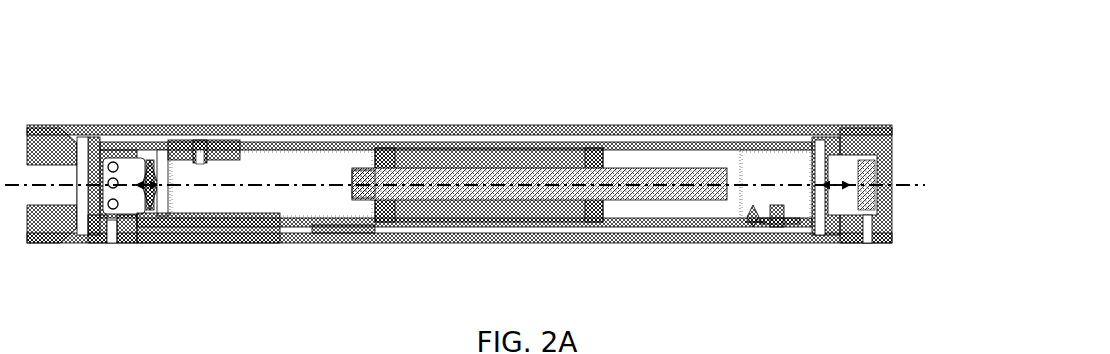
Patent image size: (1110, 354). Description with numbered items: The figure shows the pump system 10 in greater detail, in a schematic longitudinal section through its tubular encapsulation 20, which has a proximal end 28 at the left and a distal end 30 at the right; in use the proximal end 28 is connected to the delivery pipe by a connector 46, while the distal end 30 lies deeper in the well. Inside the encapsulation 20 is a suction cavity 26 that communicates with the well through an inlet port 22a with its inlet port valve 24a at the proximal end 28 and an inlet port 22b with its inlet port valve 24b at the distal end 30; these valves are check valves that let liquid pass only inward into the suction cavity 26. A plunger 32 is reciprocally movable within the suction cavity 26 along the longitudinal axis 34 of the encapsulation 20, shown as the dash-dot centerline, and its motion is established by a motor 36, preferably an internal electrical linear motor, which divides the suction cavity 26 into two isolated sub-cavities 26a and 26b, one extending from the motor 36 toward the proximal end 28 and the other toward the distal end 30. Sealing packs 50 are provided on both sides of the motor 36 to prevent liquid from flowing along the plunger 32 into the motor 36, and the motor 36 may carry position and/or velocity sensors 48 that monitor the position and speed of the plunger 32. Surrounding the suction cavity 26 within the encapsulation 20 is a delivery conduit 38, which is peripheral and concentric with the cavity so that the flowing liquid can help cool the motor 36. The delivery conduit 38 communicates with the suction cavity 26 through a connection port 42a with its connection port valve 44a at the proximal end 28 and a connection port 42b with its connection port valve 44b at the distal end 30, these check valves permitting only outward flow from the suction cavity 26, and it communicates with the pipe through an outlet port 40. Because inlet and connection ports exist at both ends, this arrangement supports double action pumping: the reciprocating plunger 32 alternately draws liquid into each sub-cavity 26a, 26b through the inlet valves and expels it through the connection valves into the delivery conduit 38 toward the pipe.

The pump system 10 is at (163, 32).
The tubular encapsulation 20 is at (392, 127).
The inlet port 22a is at (110, 249).
The inlet port 22b is at (864, 248).
The inlet port valve 24a is at (137, 128).
The inlet port valve 24b is at (817, 128).
The suction cavity 26 is at (277, 162).
The sub-cavity 26a is at (298, 176).
The sub-cavity 26b is at (748, 183).
The proximal end 28 is at (41, 102).
The distal end 30 is at (884, 100).
The plunger 32 is at (484, 198).
The longitudinal axis 34 is at (305, 183).
The motor 36 is at (437, 212).
The delivery conduit 38 is at (645, 130).
The outlet port 40 is at (152, 138).
The connection port 42a is at (187, 172).
The connection port 42b is at (752, 198).
The connection port valve 44a is at (207, 128).
The connection port valve 44b is at (770, 228).
The connector 46 is at (43, 240).
The position and/or velocity sensors 48 is at (322, 243).
The sealing packs 50 is at (386, 203).